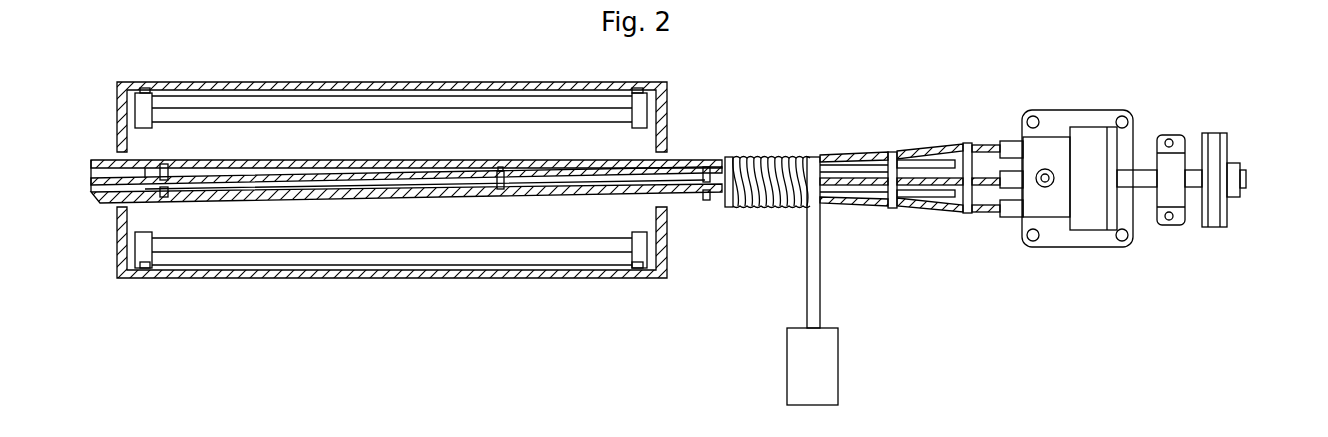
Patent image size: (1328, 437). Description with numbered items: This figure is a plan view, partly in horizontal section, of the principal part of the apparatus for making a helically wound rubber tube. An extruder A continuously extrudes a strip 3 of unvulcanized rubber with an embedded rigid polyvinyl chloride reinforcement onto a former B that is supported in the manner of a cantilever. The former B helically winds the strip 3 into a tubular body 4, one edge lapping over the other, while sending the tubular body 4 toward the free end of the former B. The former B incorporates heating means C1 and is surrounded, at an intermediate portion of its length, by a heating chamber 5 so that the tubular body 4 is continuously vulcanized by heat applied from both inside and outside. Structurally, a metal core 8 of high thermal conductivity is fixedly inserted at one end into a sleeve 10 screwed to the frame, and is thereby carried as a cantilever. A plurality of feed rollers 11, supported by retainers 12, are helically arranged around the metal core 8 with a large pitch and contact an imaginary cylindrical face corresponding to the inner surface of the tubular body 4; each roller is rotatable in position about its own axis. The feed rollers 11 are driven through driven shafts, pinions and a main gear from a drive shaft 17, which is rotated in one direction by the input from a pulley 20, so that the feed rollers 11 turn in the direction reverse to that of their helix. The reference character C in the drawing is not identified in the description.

The strip 3 is at (820, 289).
The tubular body 4 is at (770, 150).
The heating chamber 5 is at (393, 222).
The metal core 8 is at (915, 170).
The sleeve 10 is at (988, 190).
The feed rollers 11 is at (407, 179).
The retainers 12 is at (150, 200).
The drive shaft 17 is at (1140, 185).
The pulley 20 is at (1222, 213).
The extruder A is at (838, 368).
The former B is at (300, 205).
The guide rod C is at (245, 107).
The heating means C1 is at (385, 162).